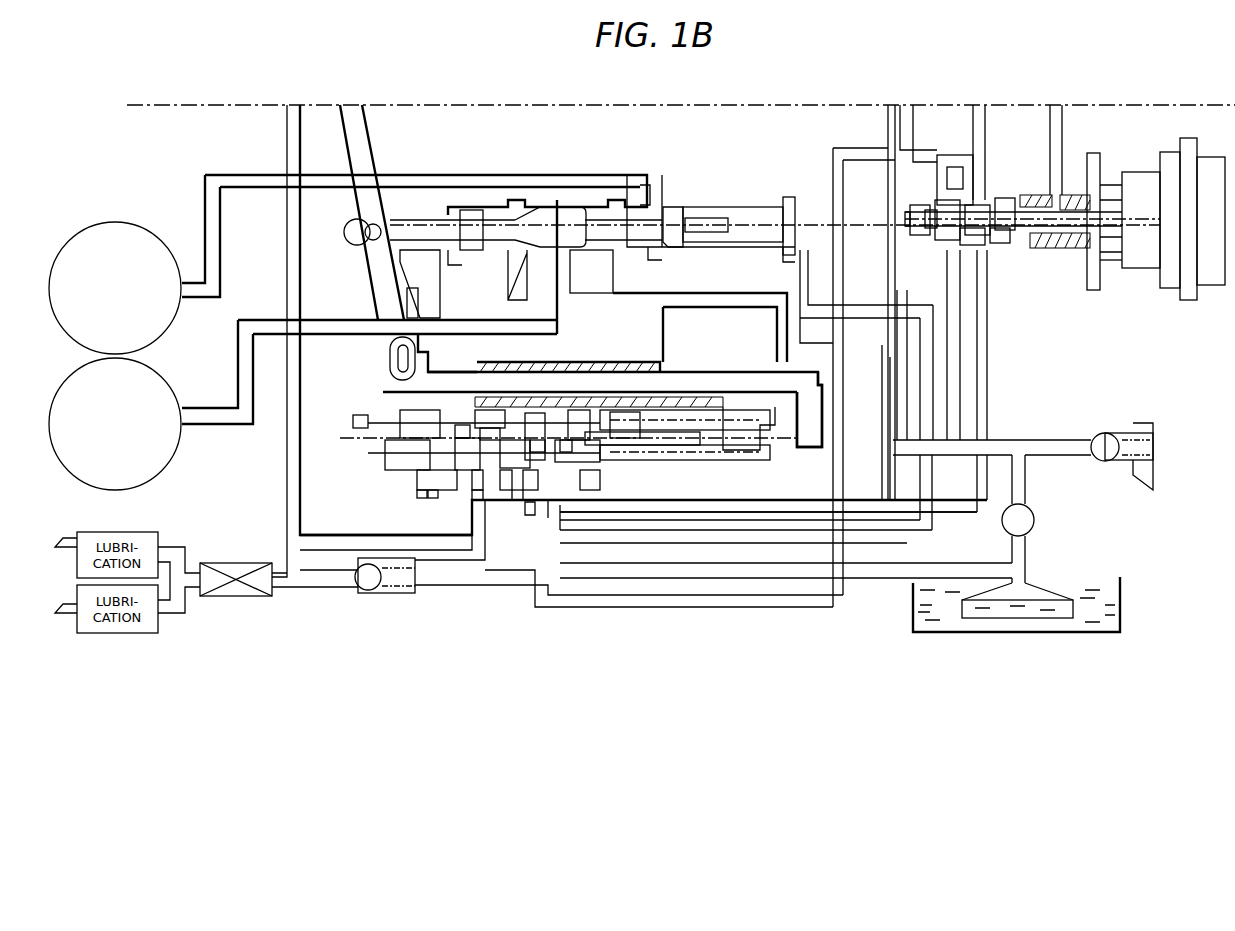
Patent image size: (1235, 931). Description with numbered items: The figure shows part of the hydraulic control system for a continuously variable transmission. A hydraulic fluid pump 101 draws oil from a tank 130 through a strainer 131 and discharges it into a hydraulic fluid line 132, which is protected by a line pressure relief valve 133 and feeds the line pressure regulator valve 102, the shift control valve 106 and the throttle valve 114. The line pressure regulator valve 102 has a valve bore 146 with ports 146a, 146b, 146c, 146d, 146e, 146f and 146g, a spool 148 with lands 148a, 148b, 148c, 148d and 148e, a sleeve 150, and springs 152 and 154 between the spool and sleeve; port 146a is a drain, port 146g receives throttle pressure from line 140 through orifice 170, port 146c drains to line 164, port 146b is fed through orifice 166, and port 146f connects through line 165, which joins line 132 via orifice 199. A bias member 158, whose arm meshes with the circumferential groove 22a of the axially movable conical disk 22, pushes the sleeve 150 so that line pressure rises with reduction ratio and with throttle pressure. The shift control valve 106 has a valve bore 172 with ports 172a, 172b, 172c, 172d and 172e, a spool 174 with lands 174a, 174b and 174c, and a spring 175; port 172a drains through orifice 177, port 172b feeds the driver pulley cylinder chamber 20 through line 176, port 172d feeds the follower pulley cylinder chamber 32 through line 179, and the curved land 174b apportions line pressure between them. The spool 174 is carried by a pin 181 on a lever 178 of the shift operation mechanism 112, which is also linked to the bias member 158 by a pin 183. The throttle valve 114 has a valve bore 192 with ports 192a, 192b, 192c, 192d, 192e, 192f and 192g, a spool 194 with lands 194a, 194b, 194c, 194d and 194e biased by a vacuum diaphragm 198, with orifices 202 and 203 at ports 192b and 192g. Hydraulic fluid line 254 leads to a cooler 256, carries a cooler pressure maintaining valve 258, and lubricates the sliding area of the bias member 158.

The driver pulley cylinder chamber 20 is at (170, 456).
The axially movable conical disk 22 is at (428, 266).
The circumferential groove 22a is at (420, 292).
The follower pulley cylinder chamber 32 is at (168, 330).
The hydraulic fluid pump 101 is at (1037, 510).
The line pressure regulator valve 102 is at (360, 505).
The shift control valve 106 is at (678, 172).
The shift operation mechanism 112 is at (343, 250).
The throttle valve 114 is at (1058, 302).
The tank 130 is at (1122, 598).
The strainer 131 is at (1030, 595).
The hydraulic fluid line 132 is at (1032, 440).
The line pressure relief valve 133 is at (1112, 432).
The hydraulic fluid line 140 is at (963, 510).
The valve bore 146 is at (433, 453).
The port 146a is at (363, 462).
The port 146b is at (418, 490).
The port 146c is at (460, 430).
The port 146d is at (478, 475).
The port 146e is at (520, 475).
The port 146f is at (560, 500).
The port 146g is at (568, 445).
The spool 148 is at (367, 452).
The land 148a is at (380, 476).
The land 148b is at (356, 428).
The land 148c is at (482, 423).
The land 148d is at (532, 448).
The land 148e is at (582, 462).
The sleeve 150 is at (755, 438).
The spring 152 is at (663, 420).
The spring 154 is at (742, 427).
The bias member 158 is at (822, 377).
The hydraulic fluid line 164 is at (463, 567).
The hydraulic fluid line 165 is at (590, 603).
The orifice 166 is at (432, 498).
The orifice 170 is at (580, 513).
The valve bore 172 is at (727, 207).
The port 172a is at (505, 258).
The port 172b is at (562, 252).
The port 172c is at (612, 258).
The port 172d is at (657, 251).
The port 172e is at (785, 251).
The spool 174 is at (410, 218).
The land 174a is at (471, 213).
The land 174b is at (570, 220).
The land 174c is at (672, 216).
The spring 175 is at (782, 200).
The hydraulic fluid line 176 is at (272, 337).
The orifice 177 is at (521, 278).
The lever 178 is at (352, 143).
The hydraulic fluid line 179 is at (255, 190).
The pin 181 is at (352, 229).
The pin 183 is at (400, 357).
The valve bore 192 is at (978, 205).
The port 192a is at (905, 247).
The port 192b is at (952, 246).
The port 192c is at (950, 257).
The port 192d is at (978, 250).
The port 192e is at (996, 246).
The port 192f is at (1030, 258).
The port 192g is at (1043, 240).
The spool 194 is at (910, 228).
The land 194a is at (912, 210).
The land 194b is at (928, 216).
The land 194c is at (1005, 212).
The land 194d is at (1037, 208).
The land 194e is at (1065, 212).
The vacuum diaphragm 198 is at (1205, 148).
The orifice 199 is at (530, 522).
The orifice 202 is at (936, 165).
The orifice 203 is at (1060, 152).
The hydraulic fluid line 254 is at (668, 307).
The cooler 256 is at (240, 563).
The cooler pressure maintaining valve 258 is at (358, 586).